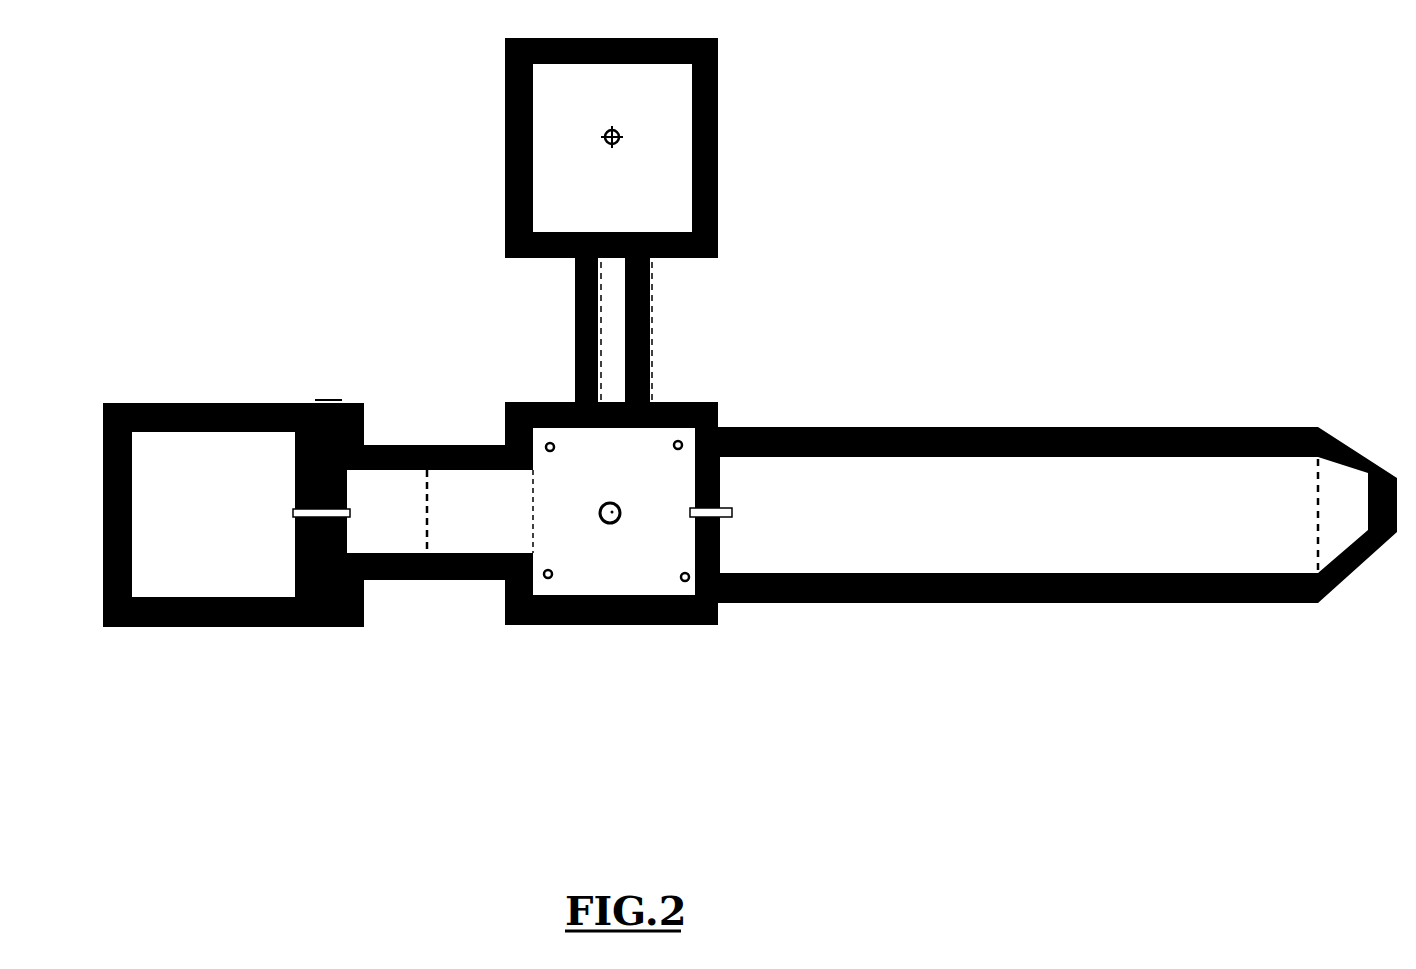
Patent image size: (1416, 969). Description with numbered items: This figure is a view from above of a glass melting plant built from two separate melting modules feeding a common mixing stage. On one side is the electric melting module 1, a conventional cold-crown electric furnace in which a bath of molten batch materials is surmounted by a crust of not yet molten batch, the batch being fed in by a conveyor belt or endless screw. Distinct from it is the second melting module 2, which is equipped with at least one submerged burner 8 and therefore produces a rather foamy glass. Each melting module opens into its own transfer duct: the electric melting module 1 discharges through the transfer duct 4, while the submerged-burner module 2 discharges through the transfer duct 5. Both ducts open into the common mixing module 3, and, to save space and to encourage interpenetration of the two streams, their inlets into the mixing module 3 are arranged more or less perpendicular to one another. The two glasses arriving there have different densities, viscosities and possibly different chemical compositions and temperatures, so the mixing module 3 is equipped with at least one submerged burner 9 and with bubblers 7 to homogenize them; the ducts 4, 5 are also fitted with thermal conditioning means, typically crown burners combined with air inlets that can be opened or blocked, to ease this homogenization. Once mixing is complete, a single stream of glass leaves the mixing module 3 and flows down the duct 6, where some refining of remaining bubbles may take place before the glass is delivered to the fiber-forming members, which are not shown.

The melting module 1 is at (179, 640).
The melting module 2 is at (755, 184).
The mixing module 3 is at (574, 638).
The transfer duct 4 is at (447, 593).
The transfer duct 5 is at (685, 327).
The duct 6 is at (962, 615).
The bubblers 7 is at (743, 629).
The submerged burner 8 is at (650, 137).
The submerged burner 9 is at (636, 540).